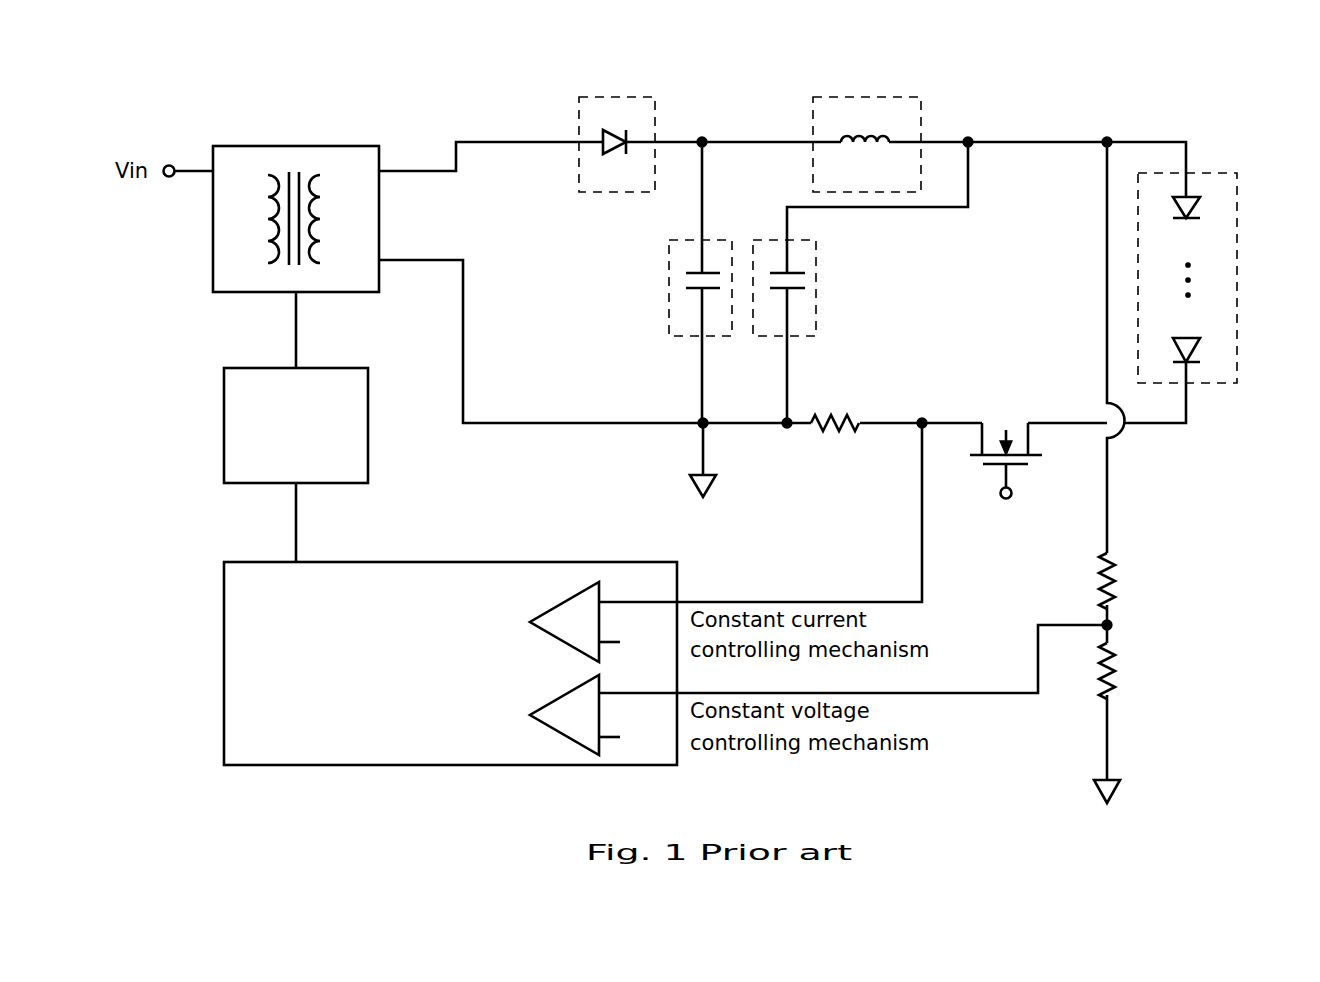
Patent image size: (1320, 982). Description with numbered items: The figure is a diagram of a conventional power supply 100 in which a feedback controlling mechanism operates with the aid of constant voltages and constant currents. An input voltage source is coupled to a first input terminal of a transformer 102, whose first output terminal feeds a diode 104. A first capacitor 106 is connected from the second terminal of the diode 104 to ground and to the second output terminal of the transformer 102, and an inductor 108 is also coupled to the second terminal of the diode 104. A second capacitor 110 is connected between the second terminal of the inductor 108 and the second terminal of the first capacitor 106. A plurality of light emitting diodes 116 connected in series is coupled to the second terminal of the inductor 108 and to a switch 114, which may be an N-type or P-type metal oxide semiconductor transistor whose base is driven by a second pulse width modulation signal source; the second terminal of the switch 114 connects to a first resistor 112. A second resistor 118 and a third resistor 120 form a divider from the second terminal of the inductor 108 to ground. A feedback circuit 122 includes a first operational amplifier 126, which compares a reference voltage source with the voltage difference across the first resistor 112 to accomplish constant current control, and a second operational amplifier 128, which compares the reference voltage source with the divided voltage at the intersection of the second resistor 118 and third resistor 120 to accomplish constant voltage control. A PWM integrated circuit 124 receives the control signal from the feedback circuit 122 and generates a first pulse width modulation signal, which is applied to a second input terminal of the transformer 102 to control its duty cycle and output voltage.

The power supply 100 is at (1143, 78).
The transformer 102 is at (237, 146).
The diode 104 is at (615, 97).
The first capacitor 106 is at (669, 290).
The inductor 108 is at (848, 97).
The second capacitor 110 is at (816, 290).
The first resistor 112 is at (833, 435).
The switch 114 is at (1012, 425).
The plurality of light emitting diodes 116 is at (1218, 173).
The second resistor 118 is at (1118, 572).
The third resistor 120 is at (1118, 660).
The feedback circuit 122 is at (422, 662).
The pulse width modulation integrated circuit 124 is at (237, 368).
The first operational amplifier 126 is at (576, 606).
The second operational amplifier 128 is at (567, 720).